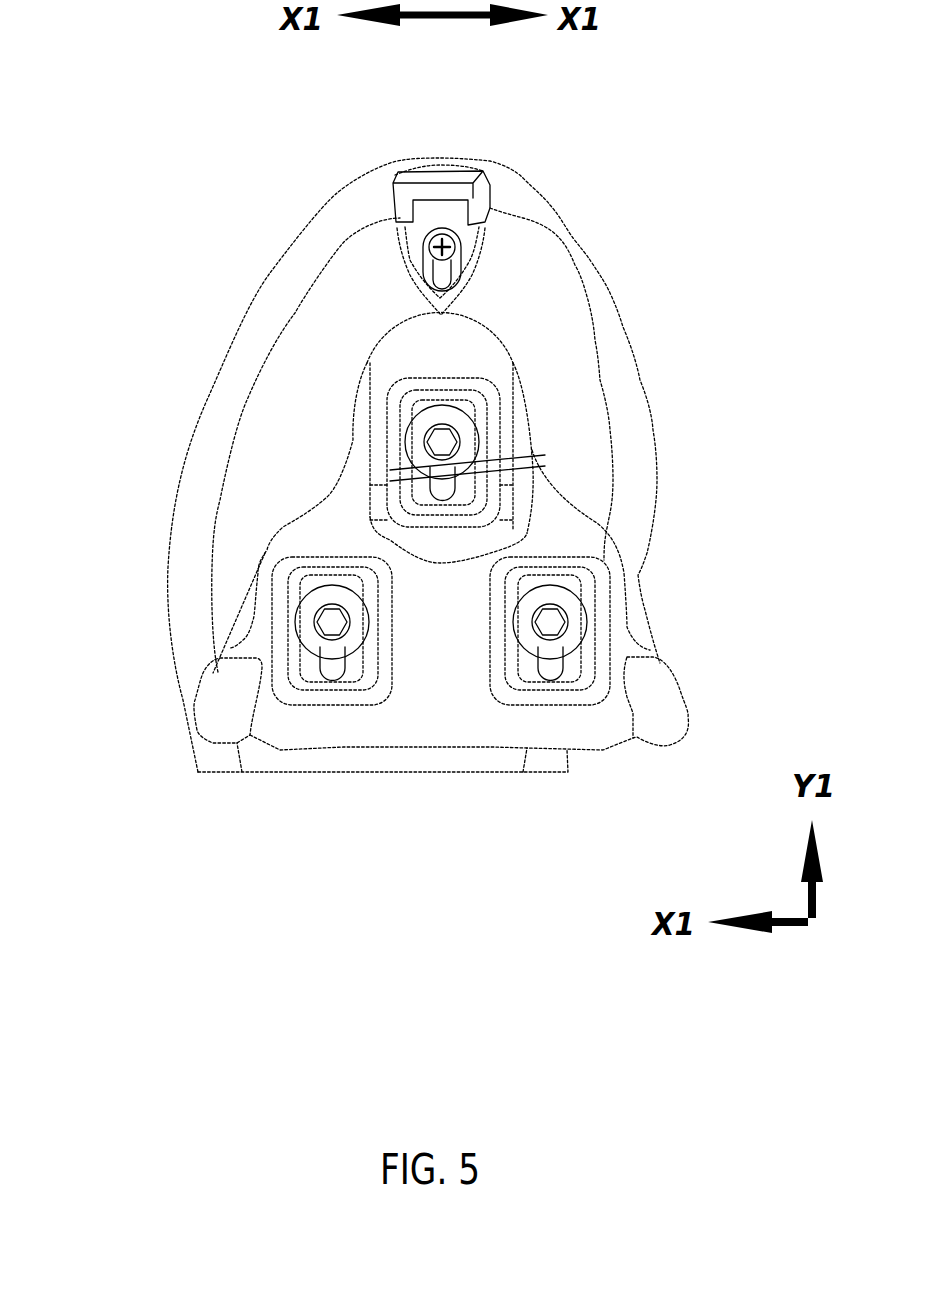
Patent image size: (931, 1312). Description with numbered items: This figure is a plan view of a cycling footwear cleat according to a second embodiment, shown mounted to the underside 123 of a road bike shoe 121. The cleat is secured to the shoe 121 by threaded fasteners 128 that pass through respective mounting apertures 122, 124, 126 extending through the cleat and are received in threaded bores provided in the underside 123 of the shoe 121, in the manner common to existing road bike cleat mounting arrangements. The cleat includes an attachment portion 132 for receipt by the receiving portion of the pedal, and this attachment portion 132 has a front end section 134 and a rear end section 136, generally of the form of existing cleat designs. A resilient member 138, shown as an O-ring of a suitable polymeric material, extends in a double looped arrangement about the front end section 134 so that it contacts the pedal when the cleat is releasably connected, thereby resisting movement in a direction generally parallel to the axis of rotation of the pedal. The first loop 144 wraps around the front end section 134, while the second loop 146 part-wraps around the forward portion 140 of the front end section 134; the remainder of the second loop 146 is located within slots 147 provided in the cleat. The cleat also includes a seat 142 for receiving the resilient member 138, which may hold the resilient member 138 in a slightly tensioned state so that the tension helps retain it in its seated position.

The shoe 121 is at (528, 267).
The mounting aperture 122 is at (507, 503).
The underside of the shoe 123 is at (527, 227).
The mounting aperture 124 is at (553, 666).
The mounting aperture 126 is at (310, 667).
The threaded fastener 128 is at (462, 423).
The attachment portion 132 is at (300, 580).
The front end section 134 is at (503, 318).
The rear end section 136 is at (229, 627).
The resilient member 138 is at (530, 397).
The forward portion 140 is at (390, 333).
The seat 142 is at (523, 363).
The first loop 144 is at (603, 441).
The second loop 146 is at (545, 455).
The slots 147 is at (500, 485).